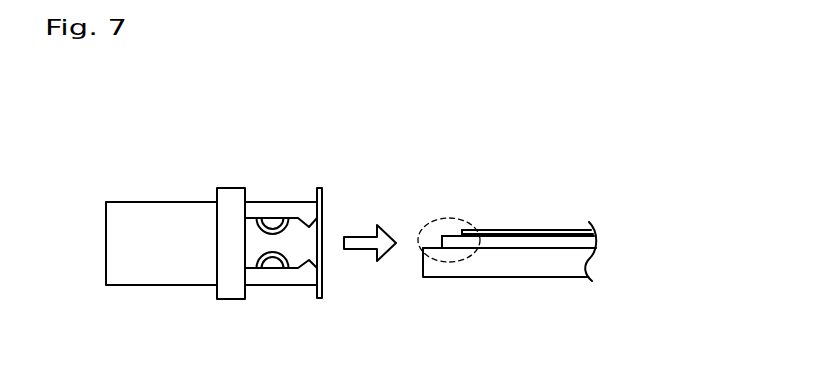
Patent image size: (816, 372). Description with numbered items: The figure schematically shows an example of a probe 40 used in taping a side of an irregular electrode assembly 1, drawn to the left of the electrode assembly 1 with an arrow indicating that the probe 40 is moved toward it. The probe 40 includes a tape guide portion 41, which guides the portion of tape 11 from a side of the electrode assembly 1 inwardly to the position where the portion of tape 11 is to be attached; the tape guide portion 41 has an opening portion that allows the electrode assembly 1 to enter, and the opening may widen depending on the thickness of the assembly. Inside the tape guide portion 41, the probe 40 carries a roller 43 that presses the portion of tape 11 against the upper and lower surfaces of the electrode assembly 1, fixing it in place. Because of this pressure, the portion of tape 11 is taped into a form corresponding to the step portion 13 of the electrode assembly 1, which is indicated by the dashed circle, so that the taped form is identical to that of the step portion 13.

The probe 40 is at (230, 92).
The tape guide portion 41 is at (291, 278).
The roller 43 is at (257, 218).
The portion of tape 11 is at (325, 206).
The irregular electrode assembly 1 is at (520, 107).
The step portion 13 is at (463, 218).